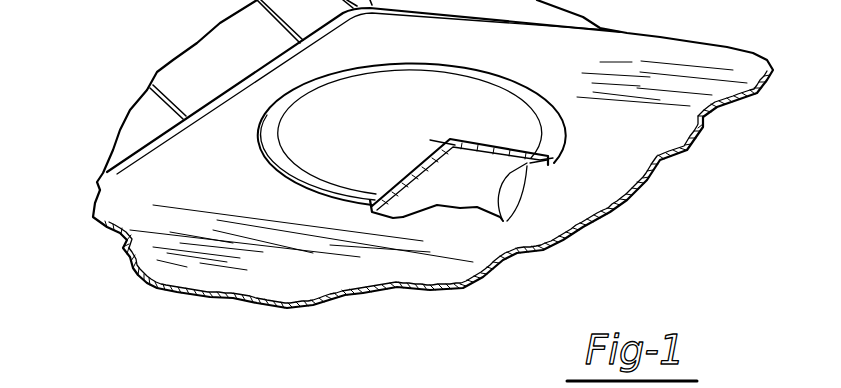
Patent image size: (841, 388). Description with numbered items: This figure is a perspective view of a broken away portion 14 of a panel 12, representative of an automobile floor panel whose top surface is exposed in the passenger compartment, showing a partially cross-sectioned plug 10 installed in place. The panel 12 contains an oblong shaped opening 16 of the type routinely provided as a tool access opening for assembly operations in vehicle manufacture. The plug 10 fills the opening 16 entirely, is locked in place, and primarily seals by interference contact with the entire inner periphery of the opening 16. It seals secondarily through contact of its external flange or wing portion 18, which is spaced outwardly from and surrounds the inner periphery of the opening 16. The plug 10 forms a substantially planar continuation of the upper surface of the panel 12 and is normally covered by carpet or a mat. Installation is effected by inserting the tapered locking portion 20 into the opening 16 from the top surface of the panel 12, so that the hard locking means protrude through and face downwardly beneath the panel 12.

The plug 10 is at (433, 154).
The panel 12 is at (668, 130).
The broken away portion 14 is at (528, 186).
The oblong shaped opening 16 is at (387, 204).
The external flange or wing portion 18 is at (551, 110).
The tapered locking portion 20 is at (412, 196).